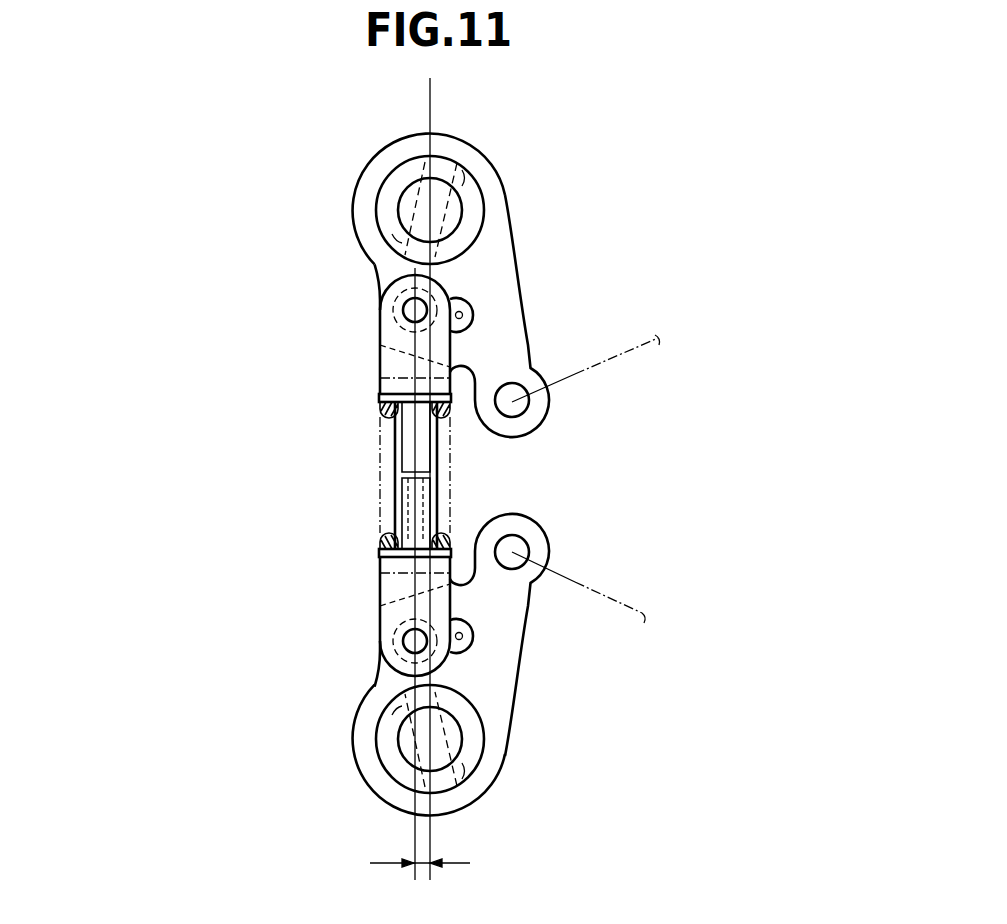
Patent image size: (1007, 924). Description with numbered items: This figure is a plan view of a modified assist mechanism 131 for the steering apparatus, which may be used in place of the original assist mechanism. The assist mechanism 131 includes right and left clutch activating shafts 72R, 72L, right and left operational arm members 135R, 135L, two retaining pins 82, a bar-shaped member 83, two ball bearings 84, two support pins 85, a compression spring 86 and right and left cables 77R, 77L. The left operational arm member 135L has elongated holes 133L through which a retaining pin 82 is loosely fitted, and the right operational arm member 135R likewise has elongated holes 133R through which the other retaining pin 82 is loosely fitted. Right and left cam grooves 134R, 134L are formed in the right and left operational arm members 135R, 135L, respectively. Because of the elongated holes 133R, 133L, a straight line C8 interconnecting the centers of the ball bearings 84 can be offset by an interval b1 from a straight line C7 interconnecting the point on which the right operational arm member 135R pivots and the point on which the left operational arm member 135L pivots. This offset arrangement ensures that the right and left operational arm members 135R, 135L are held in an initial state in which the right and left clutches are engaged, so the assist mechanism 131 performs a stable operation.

The assist mechanism 131 is at (175, 176).
The right operational arm member 135R is at (358, 178).
The left operational arm member 135L is at (355, 776).
The right clutch activating shaft 72R is at (397, 220).
The left clutch activating shaft 72L is at (398, 735).
The elongated holes 133R is at (397, 255).
The elongated holes 133L is at (392, 700).
The retaining pin 82 is at (450, 208).
The right cam groove 134R is at (462, 313).
The left cam groove 134L is at (462, 634).
The right cable 77R is at (627, 354).
The left cable 77L is at (607, 590).
The bar-shaped member 83 is at (392, 466).
The ball bearing 84 is at (378, 332).
The support pin 85 is at (403, 310).
The compression spring 86 is at (380, 528).
The straight line C7 is at (430, 803).
The straight line C8 is at (414, 838).
The interval b1 is at (412, 852).